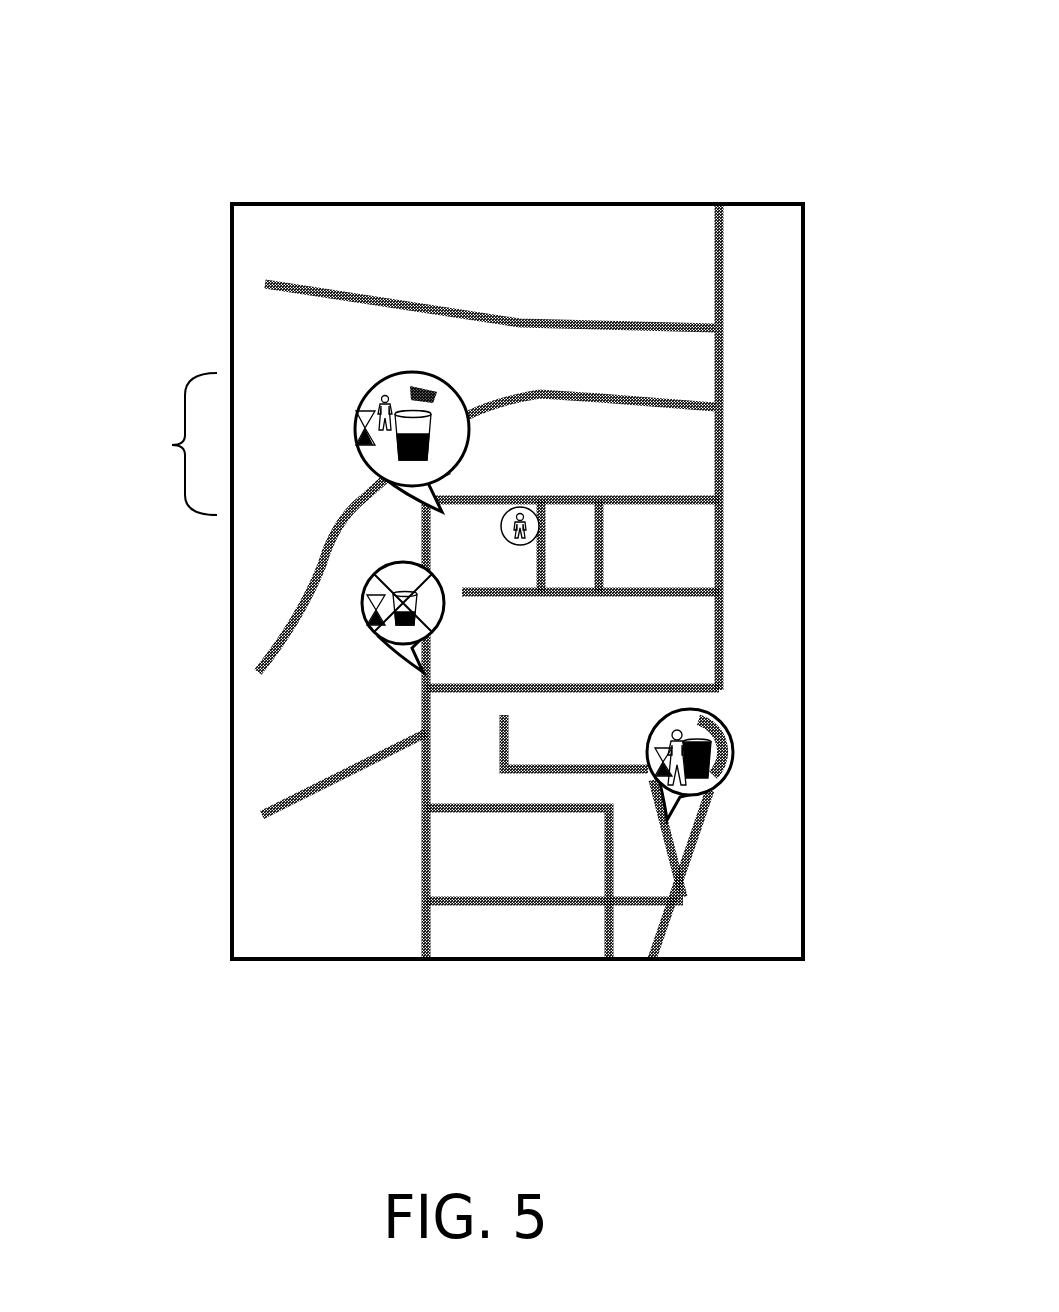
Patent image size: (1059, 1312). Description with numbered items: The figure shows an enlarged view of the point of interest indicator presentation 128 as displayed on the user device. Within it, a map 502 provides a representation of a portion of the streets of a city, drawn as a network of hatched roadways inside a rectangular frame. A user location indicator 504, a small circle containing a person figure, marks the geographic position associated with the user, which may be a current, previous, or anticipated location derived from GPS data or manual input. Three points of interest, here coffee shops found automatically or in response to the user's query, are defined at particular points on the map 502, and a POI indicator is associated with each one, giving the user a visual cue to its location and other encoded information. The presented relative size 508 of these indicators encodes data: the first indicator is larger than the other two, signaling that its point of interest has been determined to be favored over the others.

The point of interest indicator presentation 128 is at (781, 47).
The map 502 is at (281, 277).
The user location indicator 504 is at (501, 528).
The relative size 508 is at (149, 444).